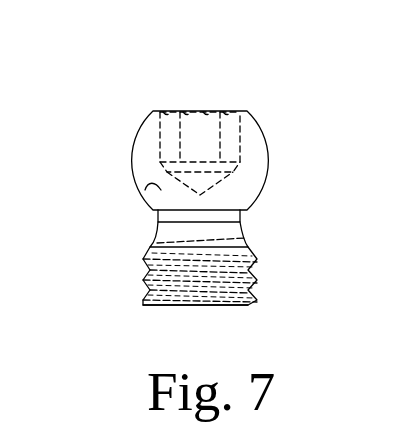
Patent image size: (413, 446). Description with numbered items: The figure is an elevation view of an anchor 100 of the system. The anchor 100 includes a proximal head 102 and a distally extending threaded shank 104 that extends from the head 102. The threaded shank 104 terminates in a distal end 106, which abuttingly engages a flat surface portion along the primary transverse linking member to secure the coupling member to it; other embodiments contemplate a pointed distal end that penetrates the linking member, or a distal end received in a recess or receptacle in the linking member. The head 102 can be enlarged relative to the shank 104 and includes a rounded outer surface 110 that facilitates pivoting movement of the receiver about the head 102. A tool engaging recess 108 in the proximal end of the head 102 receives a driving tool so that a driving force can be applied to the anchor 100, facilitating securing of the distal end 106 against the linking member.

The anchor 100 is at (214, 190).
The proximal head 102 is at (139, 145).
The threaded shank 104 is at (150, 260).
The distal end 106 is at (165, 307).
The tool engaging recess 108 is at (205, 126).
The rounded outer surface 110 is at (147, 188).